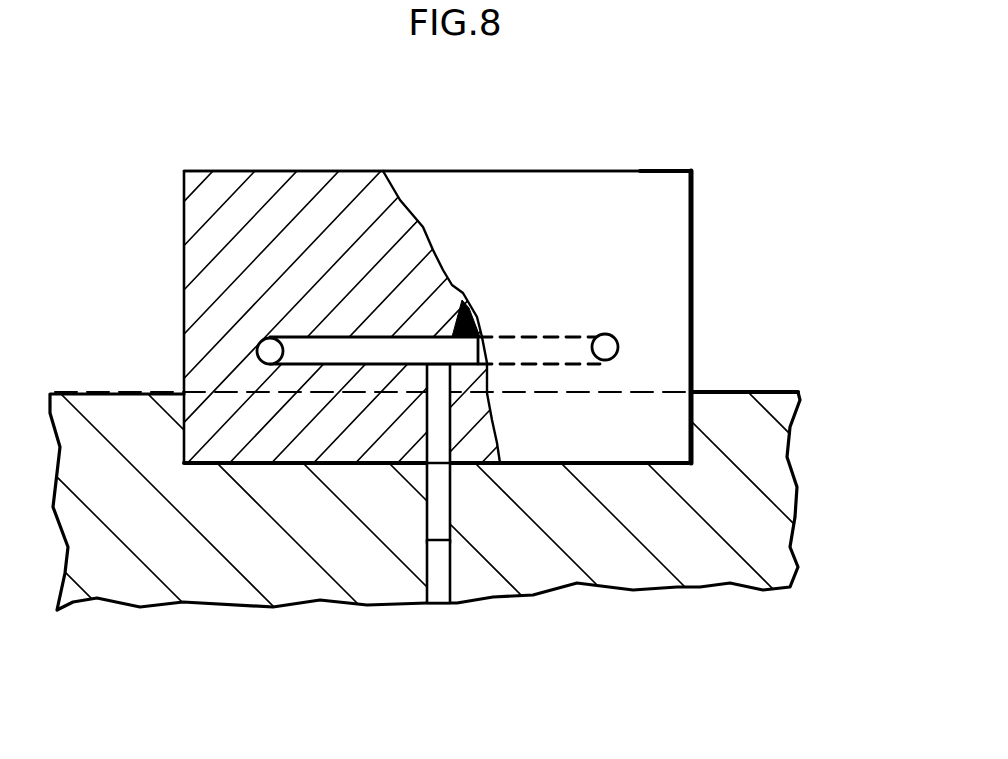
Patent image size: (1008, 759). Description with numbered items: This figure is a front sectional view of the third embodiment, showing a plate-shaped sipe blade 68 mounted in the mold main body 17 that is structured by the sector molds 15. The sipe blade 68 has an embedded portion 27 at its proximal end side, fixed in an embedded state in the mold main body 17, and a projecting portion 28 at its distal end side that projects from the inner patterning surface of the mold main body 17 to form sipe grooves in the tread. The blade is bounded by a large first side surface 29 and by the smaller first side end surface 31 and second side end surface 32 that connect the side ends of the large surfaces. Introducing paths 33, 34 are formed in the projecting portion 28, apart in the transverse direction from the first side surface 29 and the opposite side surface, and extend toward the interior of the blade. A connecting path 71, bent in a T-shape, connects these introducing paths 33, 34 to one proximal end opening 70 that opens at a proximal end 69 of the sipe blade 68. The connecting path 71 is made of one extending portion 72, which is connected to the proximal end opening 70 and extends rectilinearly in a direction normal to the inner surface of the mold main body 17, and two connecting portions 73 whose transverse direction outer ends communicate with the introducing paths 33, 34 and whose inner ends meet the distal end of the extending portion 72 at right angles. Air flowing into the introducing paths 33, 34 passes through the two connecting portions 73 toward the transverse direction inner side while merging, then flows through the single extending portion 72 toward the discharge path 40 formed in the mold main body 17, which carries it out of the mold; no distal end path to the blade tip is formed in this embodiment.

The sector mold 15 is at (757, 392).
The mold main body 17 is at (812, 422).
The embedded portion 27 is at (692, 438).
The projecting portion 28 is at (657, 232).
The first side surface 29 is at (531, 200).
The first side end surface 31 is at (182, 237).
The second side end surface 32 is at (692, 293).
The introducing path 33 is at (262, 352).
The introducing path 34 is at (539, 350).
The discharge path 40 is at (440, 603).
The sipe blade 68 is at (630, 186).
The proximal end 69 is at (622, 463).
The proximal end opening 70 is at (438, 468).
The connecting path 71 is at (455, 315).
The extending portion 72 is at (434, 420).
The connecting portion 73 is at (336, 336).